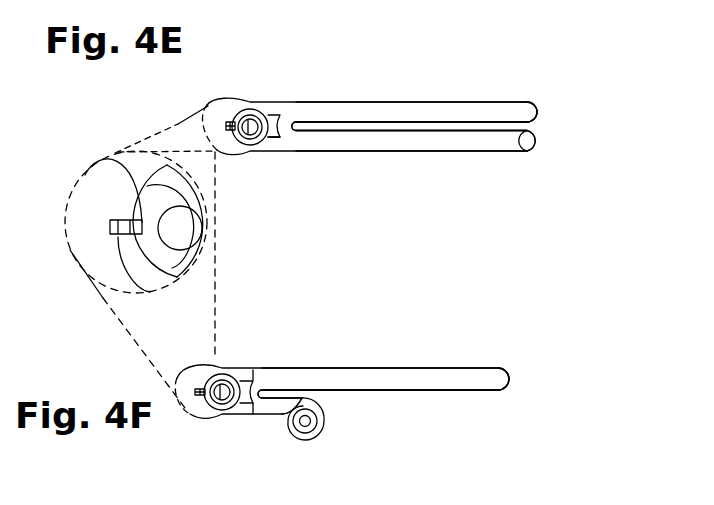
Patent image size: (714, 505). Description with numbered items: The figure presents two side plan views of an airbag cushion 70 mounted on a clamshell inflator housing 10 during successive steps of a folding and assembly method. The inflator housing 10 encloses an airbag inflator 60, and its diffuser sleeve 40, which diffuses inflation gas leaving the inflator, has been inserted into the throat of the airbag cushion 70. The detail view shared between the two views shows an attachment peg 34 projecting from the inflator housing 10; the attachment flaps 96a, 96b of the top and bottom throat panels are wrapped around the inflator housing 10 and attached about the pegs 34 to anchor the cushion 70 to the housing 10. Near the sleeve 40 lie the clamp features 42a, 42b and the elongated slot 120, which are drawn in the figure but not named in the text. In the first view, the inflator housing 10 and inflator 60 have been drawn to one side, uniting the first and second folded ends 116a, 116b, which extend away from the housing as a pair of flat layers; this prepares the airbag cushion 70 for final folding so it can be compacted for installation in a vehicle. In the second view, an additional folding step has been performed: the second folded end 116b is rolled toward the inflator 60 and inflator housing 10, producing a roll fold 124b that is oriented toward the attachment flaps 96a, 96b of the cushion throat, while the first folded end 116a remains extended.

In FIG. 4E, the inflator housing 10 is at (257, 114).
In FIG. 4F, the inflator housing 10 is at (236, 378).
In FIG. 4E, the airbag mounting peg 34 is at (110, 226).
In FIG. 4E, the diffuser sleeve 40 is at (311, 93).
In FIG. 4F, the diffuser sleeve 40 is at (297, 346).
In FIG. 4E, the first clamp piece 42a is at (268, 112).
In FIG. 4F, the first clamp piece 42a is at (262, 368).
In FIG. 4E, the second clamp piece 42b is at (273, 137).
In FIG. 4F, the second clamp piece 42b is at (253, 414).
In FIG. 4E, the airbag inflator 60 is at (244, 110).
In FIG. 4F, the airbag inflator 60 is at (215, 374).
In FIG. 4E, the airbag cushion 70 is at (576, 125).
In FIG. 4F, the airbag cushion 70 is at (516, 355).
In FIG. 4E, the attachment flap 96a is at (115, 153).
In FIG. 4E, the attachment flap 96b is at (118, 238).
In FIG. 4E, the first folded end 116a is at (539, 112).
In FIG. 4F, the first folded end 116a is at (509, 381).
In FIG. 4E, the second folded end 116b is at (540, 142).
In FIG. 4F, the second folded end 116b is at (311, 423).
In FIG. 4E, the slot 120 is at (470, 92).
In FIG. 4F, the slot 120 is at (401, 344).
In FIG. 4F, the roll fold 124b is at (313, 425).